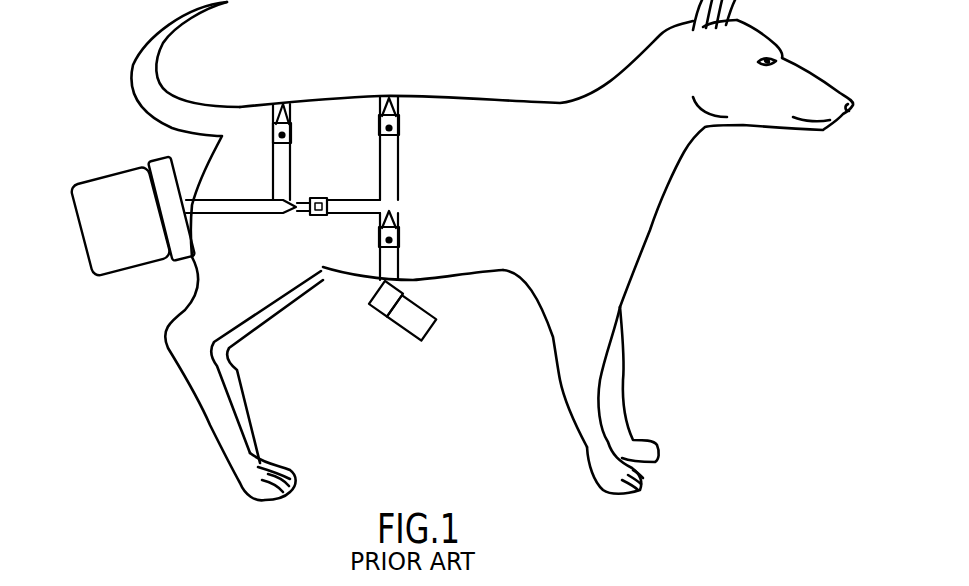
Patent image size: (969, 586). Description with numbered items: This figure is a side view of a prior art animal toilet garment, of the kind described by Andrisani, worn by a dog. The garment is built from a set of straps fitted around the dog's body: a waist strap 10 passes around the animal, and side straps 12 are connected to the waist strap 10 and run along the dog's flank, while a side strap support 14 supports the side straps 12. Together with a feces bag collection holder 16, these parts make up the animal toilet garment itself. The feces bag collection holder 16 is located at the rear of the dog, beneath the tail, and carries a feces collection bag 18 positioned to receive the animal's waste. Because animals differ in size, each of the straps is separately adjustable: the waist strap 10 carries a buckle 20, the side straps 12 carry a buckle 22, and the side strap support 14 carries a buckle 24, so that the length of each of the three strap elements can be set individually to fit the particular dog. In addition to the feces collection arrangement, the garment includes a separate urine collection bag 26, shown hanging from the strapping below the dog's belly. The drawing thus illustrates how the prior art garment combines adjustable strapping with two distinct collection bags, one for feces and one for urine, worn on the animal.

The waist strap 10 is at (349, 184).
The side straps 12 is at (352, 204).
The side strap support 14 is at (250, 198).
The feces bag collection holder 16 is at (157, 160).
The feces collection bag 18 is at (84, 222).
The buckle 20 is at (398, 222).
The buckle 22 is at (316, 198).
The buckle 24 is at (272, 128).
The urine collection bag 26 is at (434, 311).